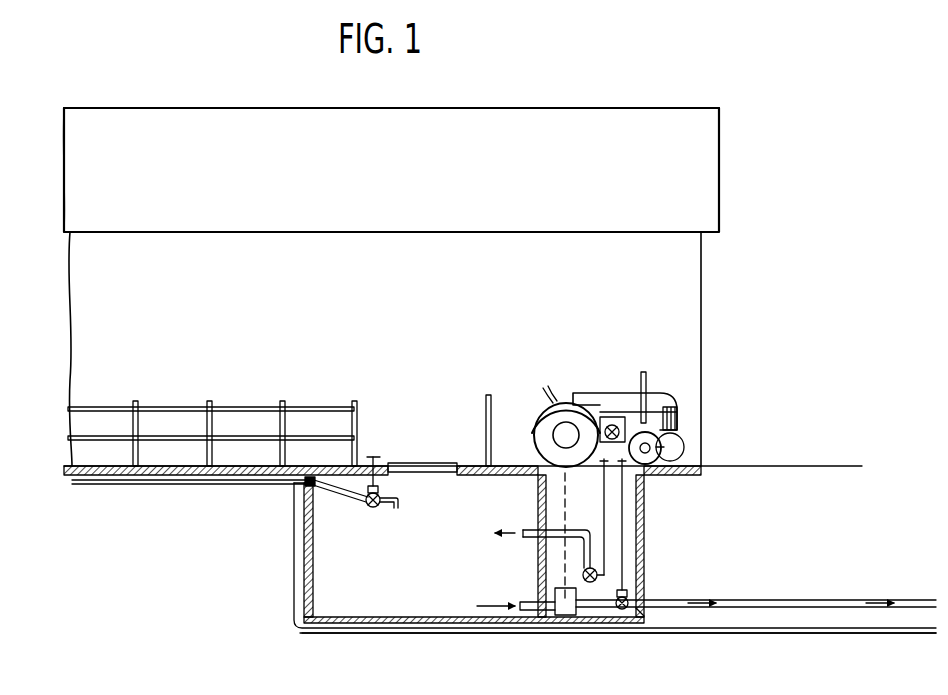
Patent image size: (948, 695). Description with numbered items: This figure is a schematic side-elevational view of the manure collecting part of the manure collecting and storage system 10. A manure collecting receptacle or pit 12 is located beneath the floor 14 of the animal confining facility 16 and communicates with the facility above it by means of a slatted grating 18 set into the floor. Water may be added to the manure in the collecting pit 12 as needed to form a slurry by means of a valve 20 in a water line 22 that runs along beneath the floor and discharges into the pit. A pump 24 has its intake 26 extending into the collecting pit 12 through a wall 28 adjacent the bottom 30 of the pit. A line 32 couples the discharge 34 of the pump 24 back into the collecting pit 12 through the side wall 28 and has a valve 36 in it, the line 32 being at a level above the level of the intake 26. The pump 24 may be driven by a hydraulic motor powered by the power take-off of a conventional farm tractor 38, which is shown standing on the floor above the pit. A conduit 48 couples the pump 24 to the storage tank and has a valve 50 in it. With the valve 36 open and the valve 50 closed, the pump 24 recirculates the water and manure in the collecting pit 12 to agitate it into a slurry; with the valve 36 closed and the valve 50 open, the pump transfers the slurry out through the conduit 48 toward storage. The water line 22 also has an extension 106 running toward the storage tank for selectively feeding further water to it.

The manure collecting and storage system 10 is at (812, 319).
The manure collecting receptacle or pit 12 is at (372, 576).
The floor 14 is at (503, 466).
The animal confining facility 16 is at (395, 181).
The slatted grating 18 is at (440, 465).
The valve 20 is at (376, 507).
The water line 22 is at (340, 494).
The pump 24 is at (566, 617).
The intake 26 is at (527, 600).
The wall 28 is at (537, 503).
The bottom 30 is at (415, 617).
The line 32 is at (528, 540).
The discharge 34 is at (613, 613).
The valve 36 is at (606, 574).
The farm tractor 38 is at (600, 394).
The conduit 48 is at (832, 599).
The valve 50 is at (641, 613).
The extension 106 is at (812, 634).